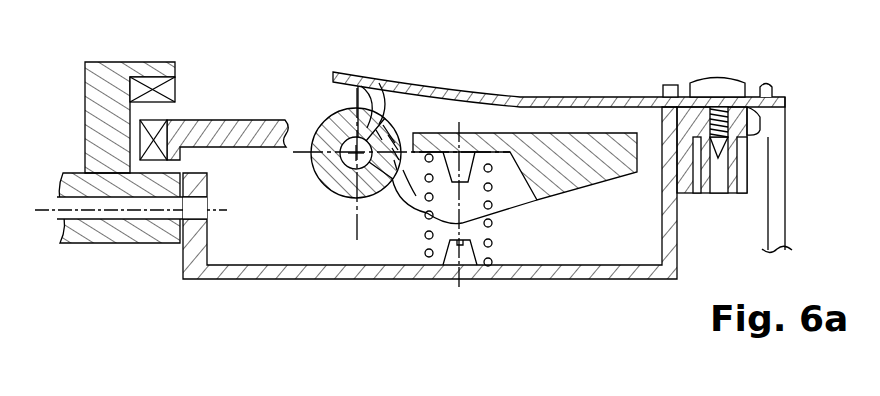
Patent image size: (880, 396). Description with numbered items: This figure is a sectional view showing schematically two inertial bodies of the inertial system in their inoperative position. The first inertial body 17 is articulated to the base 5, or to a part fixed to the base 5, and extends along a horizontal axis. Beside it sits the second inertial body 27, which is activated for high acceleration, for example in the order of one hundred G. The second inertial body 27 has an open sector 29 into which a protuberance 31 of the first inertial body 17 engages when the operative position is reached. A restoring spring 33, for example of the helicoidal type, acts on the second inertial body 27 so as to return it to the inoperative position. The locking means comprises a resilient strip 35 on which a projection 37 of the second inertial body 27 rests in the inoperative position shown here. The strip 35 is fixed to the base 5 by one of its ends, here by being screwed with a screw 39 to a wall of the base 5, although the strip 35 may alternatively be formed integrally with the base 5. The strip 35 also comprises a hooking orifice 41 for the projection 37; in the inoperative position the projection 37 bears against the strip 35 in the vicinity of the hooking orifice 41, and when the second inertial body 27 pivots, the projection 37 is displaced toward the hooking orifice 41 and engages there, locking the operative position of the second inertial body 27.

The base 5 is at (345, 272).
The first inertial body 17 is at (247, 118).
The second inertial body 27 is at (320, 185).
The open sector 29 is at (400, 190).
The protuberance 31 is at (389, 132).
The restoring spring 33 is at (506, 256).
The resilient strip 35 is at (475, 88).
The projection 37 is at (338, 95).
The screw 39 is at (702, 58).
The hooking orifice 41 is at (390, 80).